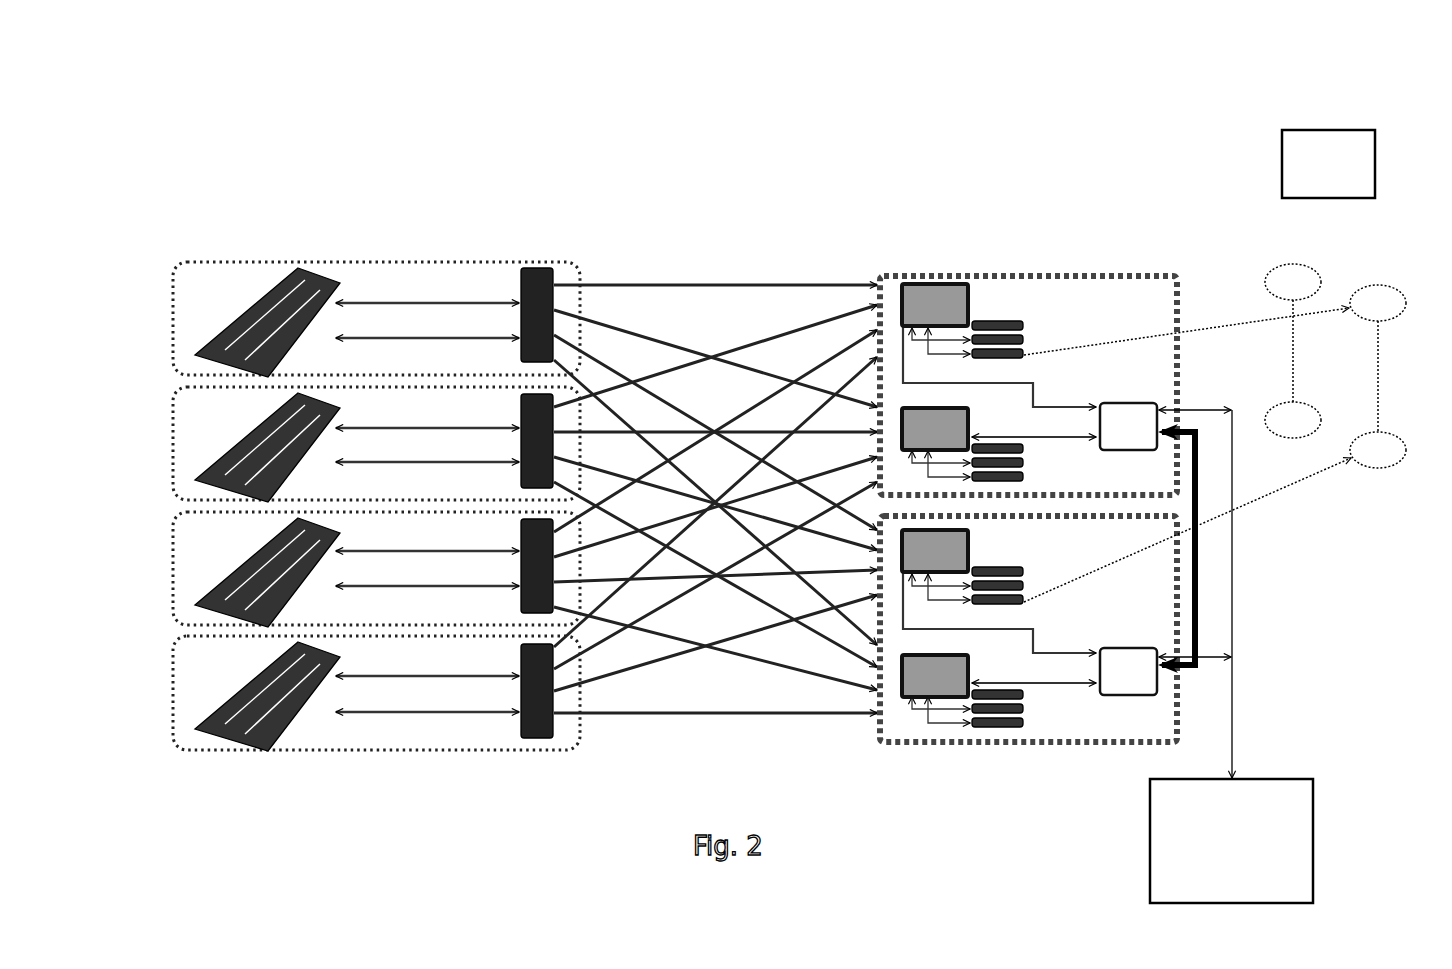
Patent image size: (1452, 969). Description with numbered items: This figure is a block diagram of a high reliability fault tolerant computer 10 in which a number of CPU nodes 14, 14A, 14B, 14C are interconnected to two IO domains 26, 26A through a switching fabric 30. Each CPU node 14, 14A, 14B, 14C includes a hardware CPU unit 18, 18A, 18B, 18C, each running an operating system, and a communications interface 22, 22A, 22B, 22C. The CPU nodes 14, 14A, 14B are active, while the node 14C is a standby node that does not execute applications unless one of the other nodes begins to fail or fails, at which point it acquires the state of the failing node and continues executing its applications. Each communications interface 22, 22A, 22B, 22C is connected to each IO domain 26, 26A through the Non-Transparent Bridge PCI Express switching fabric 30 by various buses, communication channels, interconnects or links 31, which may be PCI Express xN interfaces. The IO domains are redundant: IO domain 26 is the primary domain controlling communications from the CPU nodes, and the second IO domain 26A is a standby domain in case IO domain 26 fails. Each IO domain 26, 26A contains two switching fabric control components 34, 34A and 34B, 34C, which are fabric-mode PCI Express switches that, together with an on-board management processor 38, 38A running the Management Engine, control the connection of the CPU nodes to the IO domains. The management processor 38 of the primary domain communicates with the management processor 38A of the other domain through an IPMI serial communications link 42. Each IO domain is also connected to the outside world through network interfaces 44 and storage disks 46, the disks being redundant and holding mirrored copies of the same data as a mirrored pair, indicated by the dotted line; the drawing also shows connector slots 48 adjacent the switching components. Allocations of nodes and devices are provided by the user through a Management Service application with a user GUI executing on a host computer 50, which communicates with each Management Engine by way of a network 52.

The high reliability fault tolerant computer 10 is at (724, 210).
The CPU node 14 is at (220, 292).
The CPU node 14A is at (193, 427).
The CPU node 14B is at (180, 550).
The standby CPU node 14C is at (190, 672).
The hardware CPU unit 18 is at (293, 345).
The hardware CPU unit 18A is at (277, 477).
The hardware CPU unit 18B is at (278, 599).
The hardware CPU unit 18C is at (278, 723).
The communications interface 22 is at (557, 274).
The communications interface 22A is at (557, 398).
The communications interface 22B is at (557, 548).
The communications interface 22C is at (557, 701).
The IO domain 26 is at (1028, 385).
The IO domain 26A is at (1028, 629).
The switching fabric 30 is at (770, 272).
The links 31 is at (415, 295).
The switching fabric control component 34 is at (951, 285).
The switching fabric control component 34A is at (969, 422).
The switching fabric control component 34B is at (969, 547).
The switching fabric control component 34C is at (969, 660).
The management processor 38 is at (1146, 405).
The management processor 38A is at (1124, 698).
The IPMI serial communications link 42 is at (1170, 698).
The network interfaces 44 is at (1024, 323).
The storage disks 46 is at (1316, 308).
The IO connectors 48 is at (999, 305).
The host computer 50 is at (1231, 841).
The network 52 is at (1240, 675).